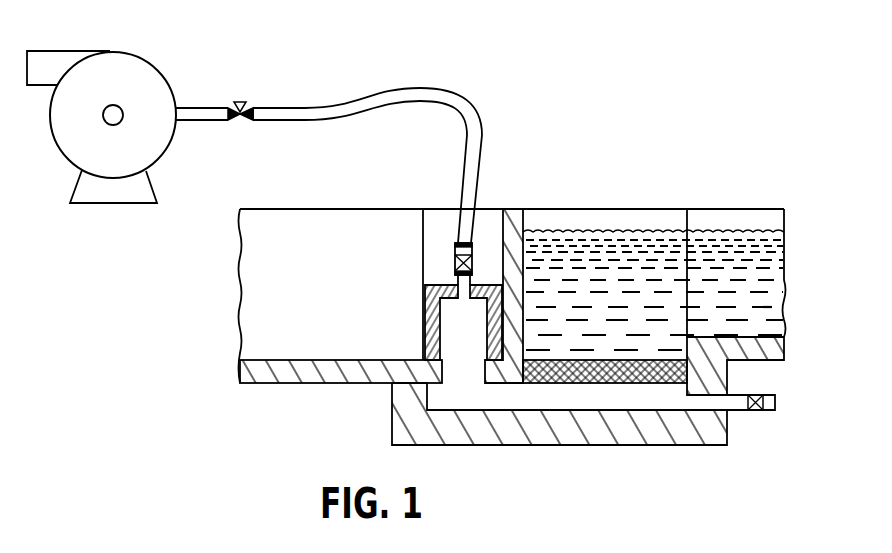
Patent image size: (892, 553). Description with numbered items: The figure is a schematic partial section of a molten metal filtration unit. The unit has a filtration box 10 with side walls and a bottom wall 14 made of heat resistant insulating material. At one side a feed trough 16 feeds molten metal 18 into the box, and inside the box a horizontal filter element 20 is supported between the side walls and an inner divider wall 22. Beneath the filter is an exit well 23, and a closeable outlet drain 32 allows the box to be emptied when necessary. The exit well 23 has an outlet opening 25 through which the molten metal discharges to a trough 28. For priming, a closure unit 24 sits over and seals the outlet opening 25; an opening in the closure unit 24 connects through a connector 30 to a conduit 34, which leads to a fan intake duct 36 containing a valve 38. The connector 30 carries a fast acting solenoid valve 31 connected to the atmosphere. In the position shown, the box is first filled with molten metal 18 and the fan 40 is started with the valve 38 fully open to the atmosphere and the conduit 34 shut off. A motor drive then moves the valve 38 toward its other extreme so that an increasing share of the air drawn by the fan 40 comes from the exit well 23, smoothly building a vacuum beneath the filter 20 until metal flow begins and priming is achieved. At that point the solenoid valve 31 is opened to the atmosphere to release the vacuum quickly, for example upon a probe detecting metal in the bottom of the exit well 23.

The filtration box 10 is at (606, 192).
The bottom wall 14 is at (522, 438).
The feed trough 16 is at (753, 216).
The molten metal 18 is at (640, 252).
The filter element 20 is at (650, 383).
The inner divider wall 22 is at (527, 223).
The exit well 23 is at (610, 397).
The closure unit 24 is at (484, 284).
The outlet opening 25 is at (462, 373).
The trough 28 is at (248, 346).
The connector 30 is at (457, 238).
The solenoid valve 31 is at (455, 262).
The outlet drain 32 is at (740, 405).
The conduit 34 is at (410, 88).
The fan intake duct 36 is at (200, 120).
The valve 38 is at (240, 102).
The fan 40 is at (165, 90).